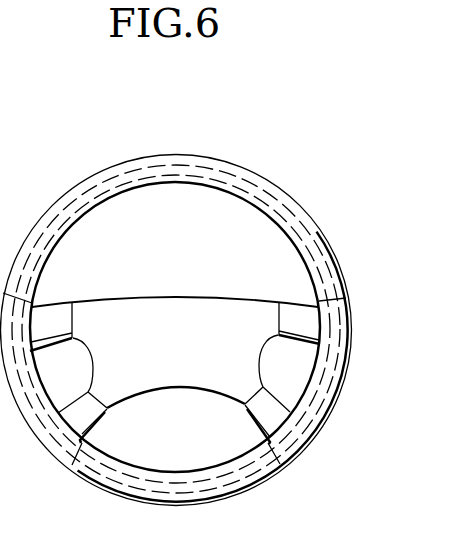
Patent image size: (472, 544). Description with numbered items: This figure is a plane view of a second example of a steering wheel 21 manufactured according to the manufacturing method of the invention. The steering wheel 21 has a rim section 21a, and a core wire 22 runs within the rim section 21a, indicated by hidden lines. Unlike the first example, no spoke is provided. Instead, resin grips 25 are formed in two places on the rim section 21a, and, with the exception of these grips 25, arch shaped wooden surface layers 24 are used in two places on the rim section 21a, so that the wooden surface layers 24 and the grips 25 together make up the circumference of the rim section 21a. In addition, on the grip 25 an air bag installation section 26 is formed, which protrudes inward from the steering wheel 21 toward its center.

The steering wheel 21 is at (350, 255).
The rim section 21a is at (115, 162).
The core wire 22 is at (267, 184).
The wooden surface layer 24 is at (200, 160).
The grip 25 is at (351, 329).
The air bag installation section 26 is at (292, 308).